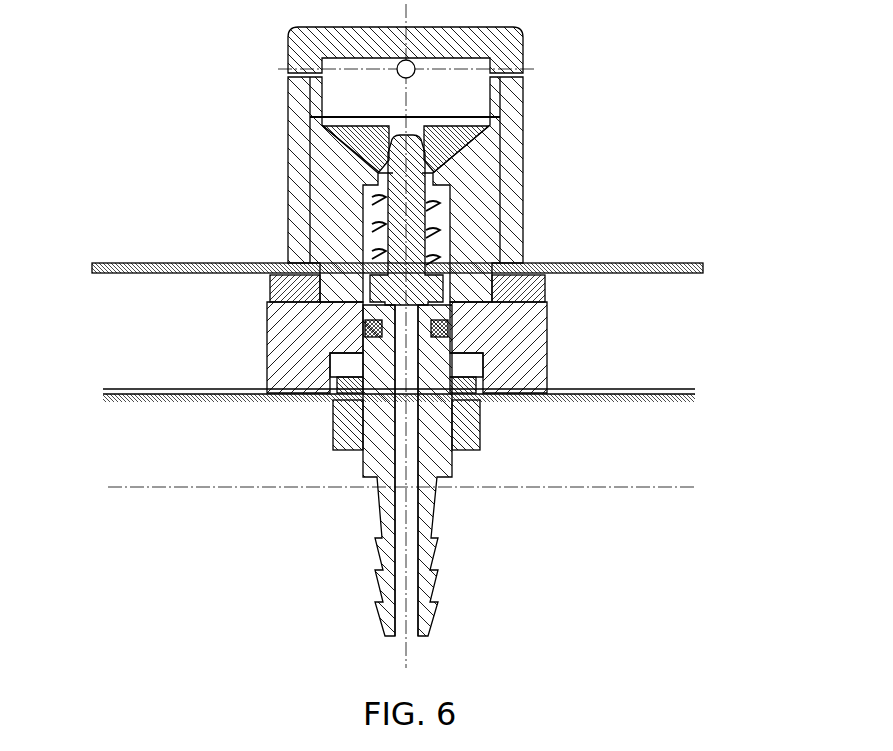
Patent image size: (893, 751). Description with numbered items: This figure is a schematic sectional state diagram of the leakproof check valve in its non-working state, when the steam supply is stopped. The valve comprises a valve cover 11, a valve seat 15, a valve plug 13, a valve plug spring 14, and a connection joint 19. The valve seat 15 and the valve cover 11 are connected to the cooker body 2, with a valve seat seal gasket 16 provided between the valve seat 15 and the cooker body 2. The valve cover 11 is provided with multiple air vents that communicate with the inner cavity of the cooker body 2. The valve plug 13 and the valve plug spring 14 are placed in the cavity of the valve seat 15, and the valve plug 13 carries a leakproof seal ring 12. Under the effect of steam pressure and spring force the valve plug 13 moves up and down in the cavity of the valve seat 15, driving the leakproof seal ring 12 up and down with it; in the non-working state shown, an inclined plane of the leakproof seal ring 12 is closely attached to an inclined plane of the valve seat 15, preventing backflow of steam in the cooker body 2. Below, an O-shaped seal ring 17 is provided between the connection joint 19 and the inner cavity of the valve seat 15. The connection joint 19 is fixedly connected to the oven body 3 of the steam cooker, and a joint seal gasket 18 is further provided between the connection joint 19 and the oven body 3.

The cooker body 2 is at (148, 263).
The oven body 3 is at (133, 392).
The valve cover 11 is at (510, 95).
The leakproof seal ring 12 is at (420, 160).
The valve plug 13 is at (410, 248).
The valve plug spring 14 is at (445, 215).
The valve seat 15 is at (480, 185).
The valve seat seal gasket 16 is at (540, 287).
The O-shaped seal ring 17 is at (452, 328).
The joint seal gasket 18 is at (475, 390).
The connection joint 19 is at (425, 458).